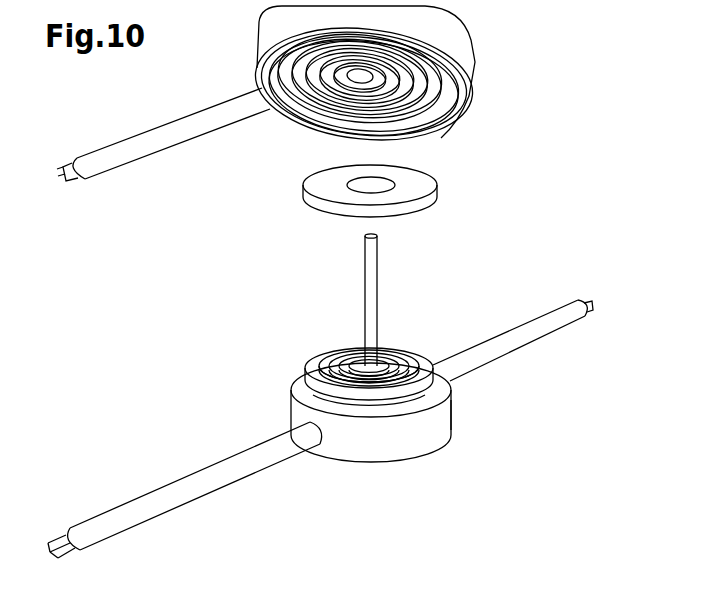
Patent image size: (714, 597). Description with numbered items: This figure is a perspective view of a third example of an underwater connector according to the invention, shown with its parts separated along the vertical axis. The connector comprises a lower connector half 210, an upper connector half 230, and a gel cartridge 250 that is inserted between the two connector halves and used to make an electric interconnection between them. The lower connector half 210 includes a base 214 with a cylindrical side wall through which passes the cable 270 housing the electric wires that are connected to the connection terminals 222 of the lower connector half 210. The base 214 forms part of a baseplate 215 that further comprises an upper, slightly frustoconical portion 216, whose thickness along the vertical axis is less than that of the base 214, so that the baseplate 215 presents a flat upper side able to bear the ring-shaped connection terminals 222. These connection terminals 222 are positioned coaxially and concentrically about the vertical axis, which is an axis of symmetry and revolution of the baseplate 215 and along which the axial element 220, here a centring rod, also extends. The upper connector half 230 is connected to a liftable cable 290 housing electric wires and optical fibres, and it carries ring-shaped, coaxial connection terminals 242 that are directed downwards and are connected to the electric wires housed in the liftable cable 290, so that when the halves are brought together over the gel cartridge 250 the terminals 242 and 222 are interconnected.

The lower connector half 210 is at (443, 455).
The base 214 is at (448, 423).
The baseplate 215 is at (294, 372).
The upper, slightly frustoconical portion 216 is at (320, 392).
The axial element 220 is at (370, 288).
The connection terminals 222 is at (413, 360).
The upper connector half 230 is at (476, 38).
The connection terminals 242 is at (422, 103).
The gel cartridge 250 is at (446, 187).
The cable 270 is at (158, 500).
The liftable cable 290 is at (184, 133).